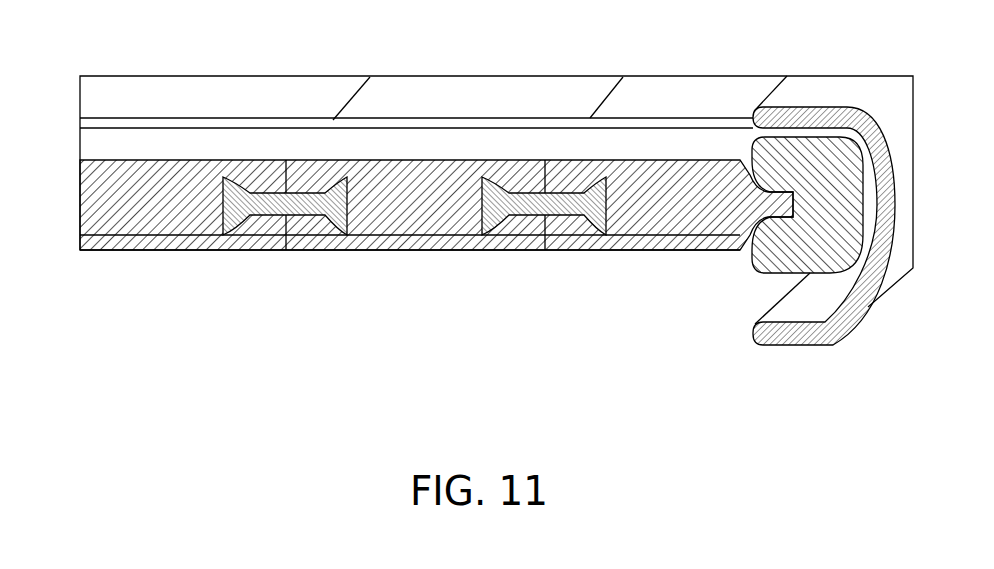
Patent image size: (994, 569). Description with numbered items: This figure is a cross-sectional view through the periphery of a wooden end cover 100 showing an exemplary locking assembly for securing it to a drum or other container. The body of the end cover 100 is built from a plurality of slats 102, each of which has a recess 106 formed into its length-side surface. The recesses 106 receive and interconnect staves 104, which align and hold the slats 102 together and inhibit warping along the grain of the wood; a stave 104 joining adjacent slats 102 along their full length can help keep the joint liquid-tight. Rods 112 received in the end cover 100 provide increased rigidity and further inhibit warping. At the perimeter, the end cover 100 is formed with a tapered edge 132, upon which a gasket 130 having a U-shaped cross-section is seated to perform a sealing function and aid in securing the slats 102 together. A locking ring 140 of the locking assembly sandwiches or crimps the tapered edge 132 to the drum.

The end cover 100 is at (187, 97).
The slat 102 is at (625, 236).
The stave 104 is at (532, 207).
The recess 106 is at (303, 190).
The rod 112 is at (88, 123).
The gasket 130 is at (800, 137).
The tapered edge 132 is at (773, 203).
The locking ring 140 is at (835, 340).